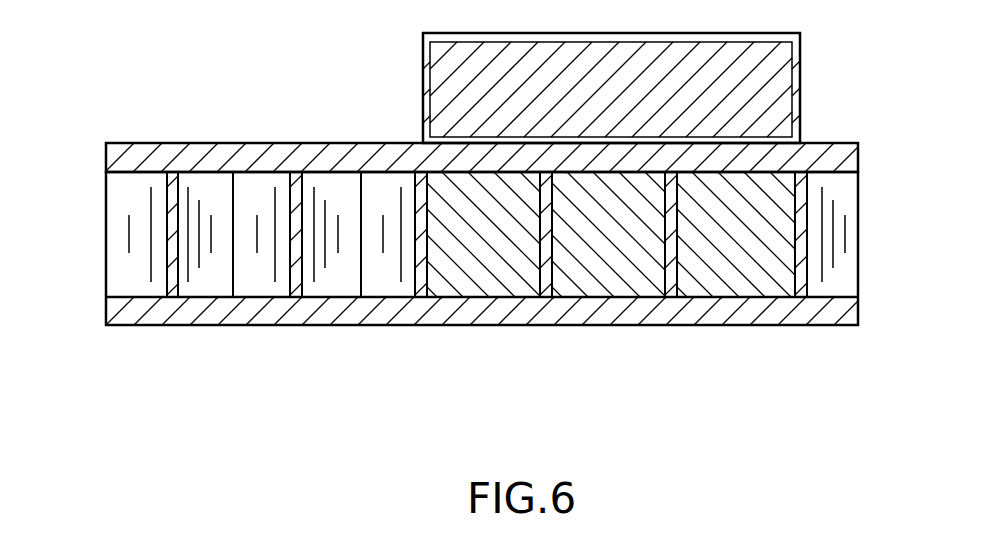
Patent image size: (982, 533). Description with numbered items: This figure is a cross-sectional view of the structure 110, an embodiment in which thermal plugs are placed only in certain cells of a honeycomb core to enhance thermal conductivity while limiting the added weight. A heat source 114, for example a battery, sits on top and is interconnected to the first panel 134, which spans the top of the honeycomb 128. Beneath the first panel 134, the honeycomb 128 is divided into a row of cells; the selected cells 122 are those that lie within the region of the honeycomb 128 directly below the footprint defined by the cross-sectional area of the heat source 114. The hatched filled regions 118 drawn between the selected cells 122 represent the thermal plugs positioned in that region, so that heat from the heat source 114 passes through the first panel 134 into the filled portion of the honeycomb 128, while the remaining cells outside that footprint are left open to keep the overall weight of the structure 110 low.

The structure 110 is at (364, 108).
The heat source 114 is at (801, 72).
The first panel 134 is at (845, 148).
The honeycomb 128 is at (96, 272).
The selected cells 122 is at (433, 278).
The solid filler blocks 118 is at (495, 278).